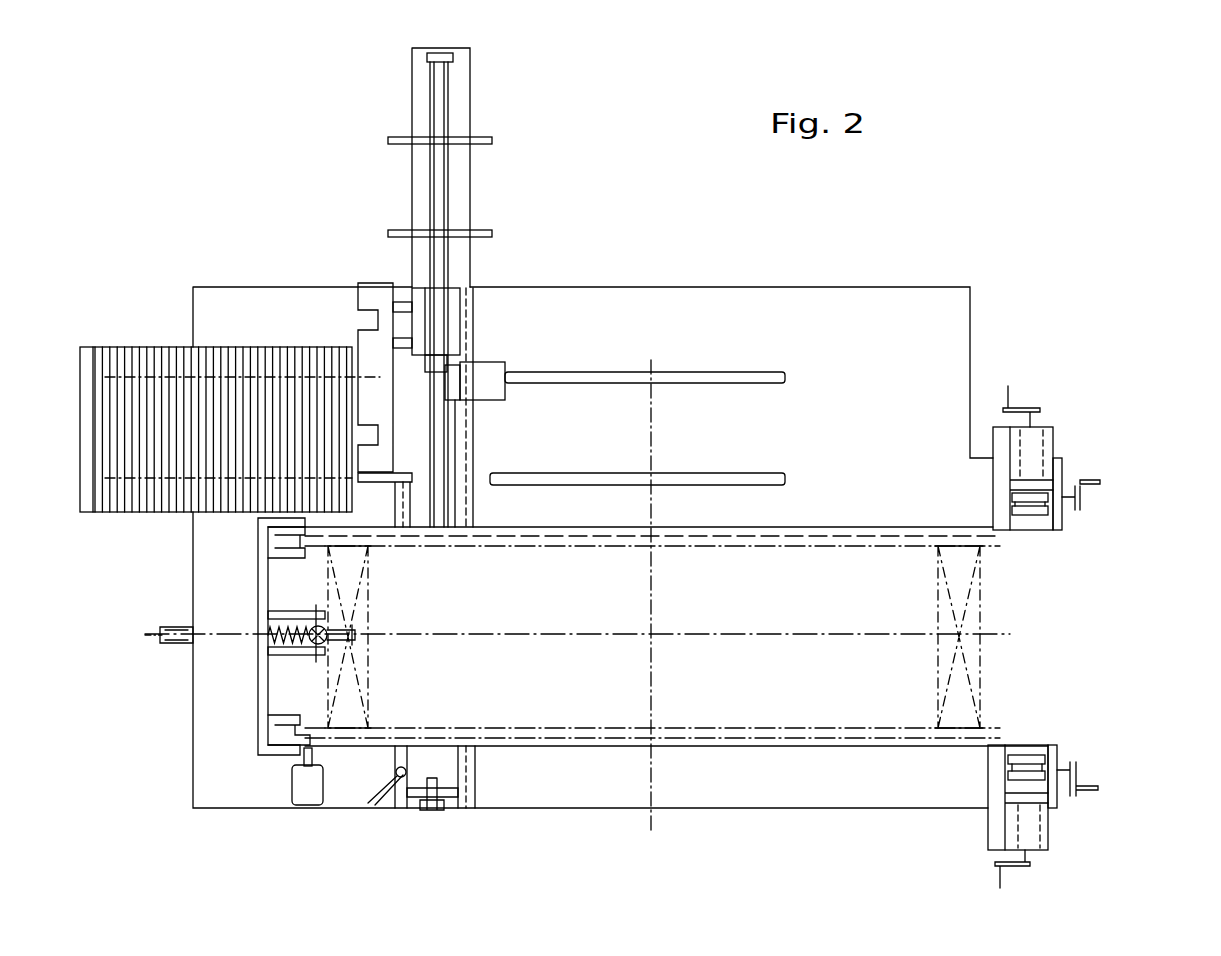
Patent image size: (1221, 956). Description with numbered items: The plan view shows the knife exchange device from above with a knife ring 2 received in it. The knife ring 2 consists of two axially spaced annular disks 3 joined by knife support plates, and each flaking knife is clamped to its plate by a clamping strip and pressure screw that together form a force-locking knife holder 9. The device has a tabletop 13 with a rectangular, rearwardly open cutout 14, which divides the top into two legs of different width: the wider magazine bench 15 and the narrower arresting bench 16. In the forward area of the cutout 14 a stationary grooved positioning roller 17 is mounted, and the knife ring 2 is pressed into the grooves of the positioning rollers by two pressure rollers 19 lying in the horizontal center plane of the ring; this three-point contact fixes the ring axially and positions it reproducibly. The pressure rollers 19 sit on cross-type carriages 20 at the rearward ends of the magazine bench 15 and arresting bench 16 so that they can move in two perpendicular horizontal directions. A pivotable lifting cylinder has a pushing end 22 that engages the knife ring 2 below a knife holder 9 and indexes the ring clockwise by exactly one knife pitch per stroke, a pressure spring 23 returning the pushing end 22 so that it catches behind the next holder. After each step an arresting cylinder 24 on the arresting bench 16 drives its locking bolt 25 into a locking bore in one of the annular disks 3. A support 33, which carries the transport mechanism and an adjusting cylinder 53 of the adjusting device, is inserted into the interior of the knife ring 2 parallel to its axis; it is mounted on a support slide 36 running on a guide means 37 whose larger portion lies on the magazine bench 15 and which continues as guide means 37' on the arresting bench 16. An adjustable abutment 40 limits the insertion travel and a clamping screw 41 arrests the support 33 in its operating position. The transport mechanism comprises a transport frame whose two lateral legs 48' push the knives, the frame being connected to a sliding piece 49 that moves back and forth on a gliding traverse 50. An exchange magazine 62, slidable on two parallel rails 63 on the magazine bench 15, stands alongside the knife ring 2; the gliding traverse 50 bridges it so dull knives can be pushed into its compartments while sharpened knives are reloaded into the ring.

The knife ring 2 is at (1004, 622).
The annular disks 3 is at (778, 737).
The force-locking knife holder 9 is at (936, 596).
The tabletop 13 is at (233, 672).
The cutout 14 is at (556, 622).
The magazine bench 15 is at (823, 434).
The arresting bench 16 is at (711, 790).
The positioning roller 17 is at (268, 544).
The pressure rollers 19 is at (1063, 480).
The cross-type carriages 20 is at (1107, 750).
The pushing end 22 is at (356, 633).
The pressure spring 23 is at (279, 630).
The arresting cylinder 24 is at (305, 793).
The locking bolt 25 is at (312, 757).
The support 33 is at (483, 438).
The support slide 36 is at (415, 180).
The guide means 37 is at (629, 457).
The guide means 37' is at (499, 777).
The adjustable abutment 40 is at (440, 797).
The clamping screw 41 is at (393, 810).
The lateral legs 48' is at (362, 379).
The sliding piece 49 is at (440, 333).
The gliding traverse 50 is at (440, 122).
The adjusting cylinder 53 is at (488, 380).
The exchange magazine 62 is at (178, 344).
The rails 63 is at (480, 233).